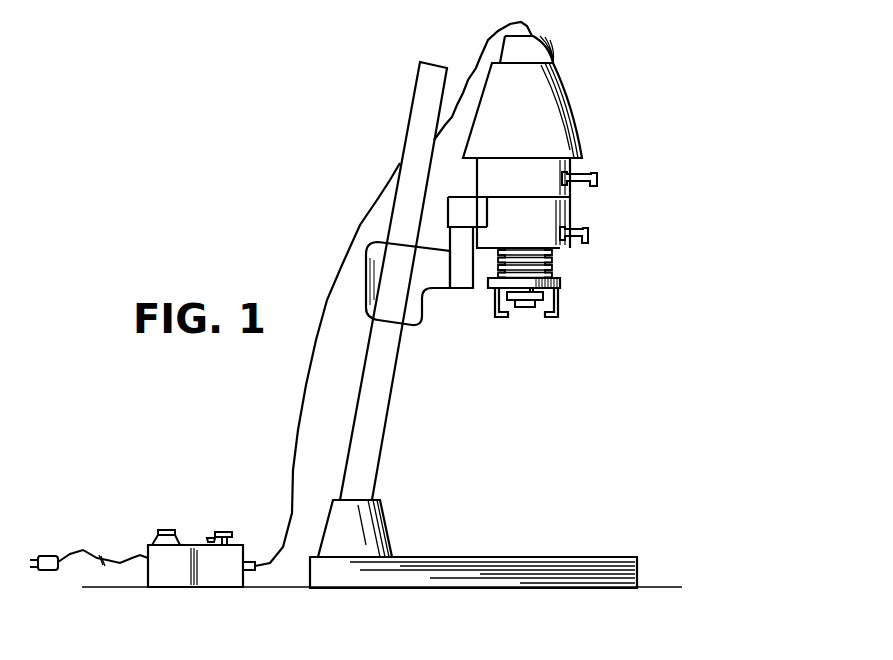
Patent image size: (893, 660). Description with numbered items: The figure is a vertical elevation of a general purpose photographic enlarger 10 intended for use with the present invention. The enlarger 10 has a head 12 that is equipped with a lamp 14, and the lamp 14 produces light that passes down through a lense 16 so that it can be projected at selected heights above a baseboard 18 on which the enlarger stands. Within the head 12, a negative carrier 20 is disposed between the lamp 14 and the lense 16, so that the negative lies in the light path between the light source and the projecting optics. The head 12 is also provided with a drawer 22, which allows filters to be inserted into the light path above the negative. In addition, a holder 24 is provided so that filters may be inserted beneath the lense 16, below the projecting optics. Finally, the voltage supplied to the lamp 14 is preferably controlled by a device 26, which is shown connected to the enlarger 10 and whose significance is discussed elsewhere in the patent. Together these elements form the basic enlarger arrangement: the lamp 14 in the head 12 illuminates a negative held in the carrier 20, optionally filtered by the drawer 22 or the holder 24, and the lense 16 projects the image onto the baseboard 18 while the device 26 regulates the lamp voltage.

The photographic enlarger 10 is at (612, 424).
The head 12 is at (607, 200).
The lamp 14 is at (530, 44).
The lense 16 is at (527, 308).
The baseboard 18 is at (562, 557).
The negative carrier 20 is at (587, 240).
The drawer 22 is at (583, 172).
The holder 24 is at (558, 312).
The device 26 is at (197, 545).